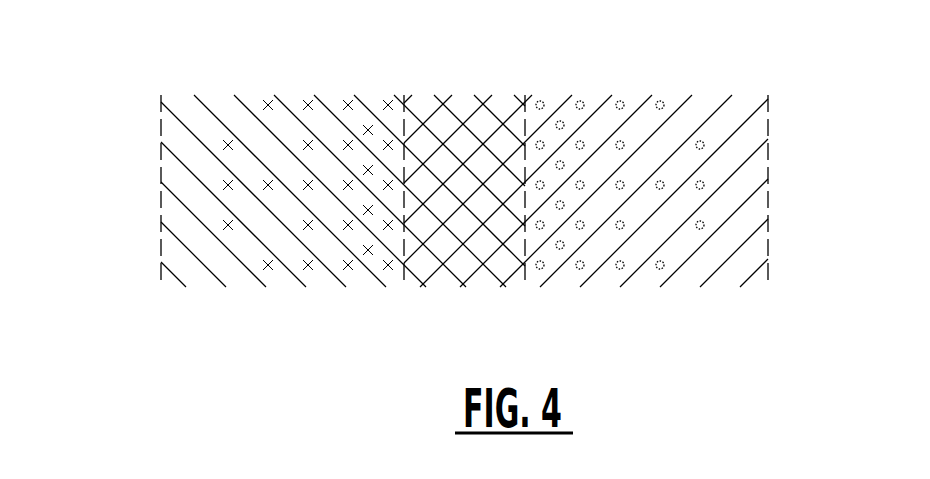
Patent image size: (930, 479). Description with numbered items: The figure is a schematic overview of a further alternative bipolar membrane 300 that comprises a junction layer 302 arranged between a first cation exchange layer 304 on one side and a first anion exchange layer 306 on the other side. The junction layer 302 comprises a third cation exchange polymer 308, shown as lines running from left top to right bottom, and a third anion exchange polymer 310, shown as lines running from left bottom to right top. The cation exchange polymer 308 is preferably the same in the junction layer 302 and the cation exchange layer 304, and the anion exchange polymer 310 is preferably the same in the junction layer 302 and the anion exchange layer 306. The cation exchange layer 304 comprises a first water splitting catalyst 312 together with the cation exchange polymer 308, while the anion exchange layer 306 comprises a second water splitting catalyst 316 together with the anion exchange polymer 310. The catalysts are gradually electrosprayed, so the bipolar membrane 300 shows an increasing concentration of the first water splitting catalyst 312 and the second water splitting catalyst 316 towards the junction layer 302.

The bipolar membrane 300 is at (420, 190).
The junction layer 302 is at (458, 308).
The first cation exchange layer 304 is at (282, 197).
The first anion exchange layer 306 is at (646, 197).
The third cation exchange polymer 308 is at (182, 284).
The third anion exchange polymer 310 is at (490, 133).
The first water splitting catalyst 312 is at (308, 104).
The second water splitting catalyst 316 is at (620, 102).